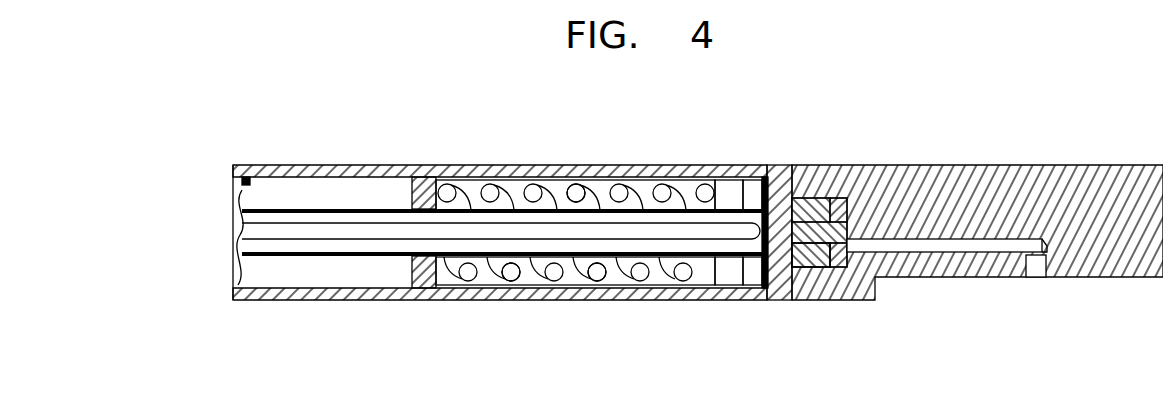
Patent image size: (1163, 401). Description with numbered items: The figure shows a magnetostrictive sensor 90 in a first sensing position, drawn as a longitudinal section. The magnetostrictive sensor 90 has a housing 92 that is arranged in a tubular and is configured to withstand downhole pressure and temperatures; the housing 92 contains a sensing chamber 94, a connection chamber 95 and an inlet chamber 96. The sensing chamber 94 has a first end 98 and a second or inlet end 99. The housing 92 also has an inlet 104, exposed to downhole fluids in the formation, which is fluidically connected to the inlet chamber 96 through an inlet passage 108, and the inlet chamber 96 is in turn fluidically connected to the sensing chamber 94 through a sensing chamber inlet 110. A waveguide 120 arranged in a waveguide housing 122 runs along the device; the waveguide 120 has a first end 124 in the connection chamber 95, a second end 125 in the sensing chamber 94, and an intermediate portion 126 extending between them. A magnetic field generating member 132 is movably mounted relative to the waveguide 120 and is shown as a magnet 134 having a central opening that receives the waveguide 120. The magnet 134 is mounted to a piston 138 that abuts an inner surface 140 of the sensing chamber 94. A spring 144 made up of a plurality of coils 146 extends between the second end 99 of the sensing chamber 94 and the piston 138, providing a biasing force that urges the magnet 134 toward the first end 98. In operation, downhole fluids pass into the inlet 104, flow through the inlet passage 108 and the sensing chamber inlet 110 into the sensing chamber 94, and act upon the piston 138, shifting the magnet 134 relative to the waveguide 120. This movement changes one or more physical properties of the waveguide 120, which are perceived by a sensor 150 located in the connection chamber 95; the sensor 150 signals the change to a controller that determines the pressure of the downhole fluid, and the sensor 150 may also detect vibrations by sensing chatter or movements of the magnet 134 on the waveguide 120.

The magnetostrictive sensor 90 is at (601, 106).
The housing 92 is at (867, 164).
The sensing chamber 94 is at (774, 300).
The connection chamber 95 is at (343, 188).
The inlet chamber 96 is at (842, 286).
The first end 98 is at (760, 183).
The second or inlet end 99 is at (437, 200).
The inlet 104 is at (1040, 284).
The inlet passage 108 is at (929, 230).
The sensing chamber inlet 110 is at (807, 197).
The waveguide 120 is at (701, 267).
The waveguide housing 122 is at (639, 189).
The first end 124 is at (240, 232).
The second end 125 is at (752, 228).
The intermediate portion 126 is at (444, 238).
The magnetic field generating member 132 is at (806, 264).
The magnet 134 is at (750, 275).
The piston 138 is at (788, 222).
The inner surface 140 is at (600, 186).
The spring 144 is at (524, 283).
The coils 146 is at (597, 275).
The sensor 150 is at (240, 185).